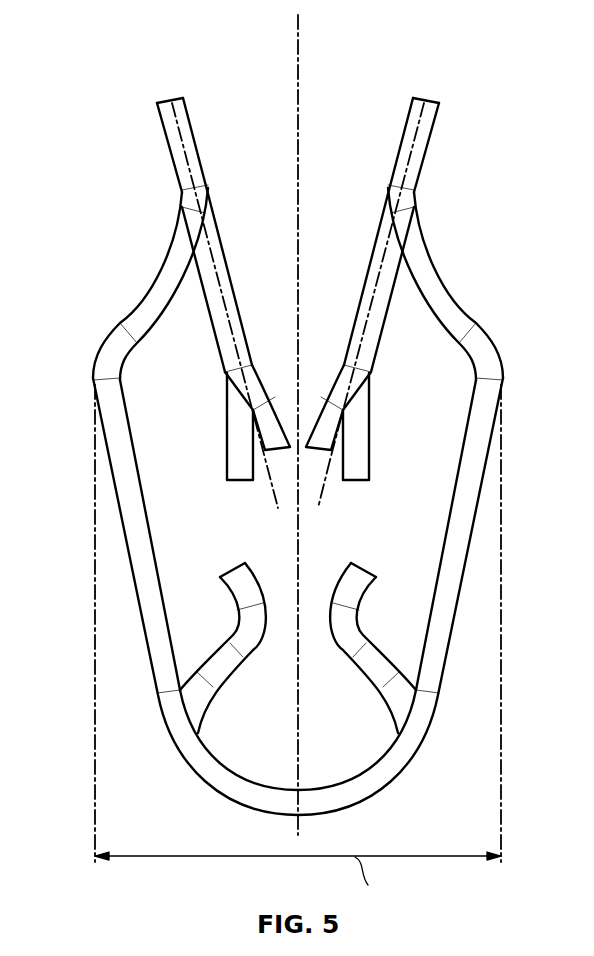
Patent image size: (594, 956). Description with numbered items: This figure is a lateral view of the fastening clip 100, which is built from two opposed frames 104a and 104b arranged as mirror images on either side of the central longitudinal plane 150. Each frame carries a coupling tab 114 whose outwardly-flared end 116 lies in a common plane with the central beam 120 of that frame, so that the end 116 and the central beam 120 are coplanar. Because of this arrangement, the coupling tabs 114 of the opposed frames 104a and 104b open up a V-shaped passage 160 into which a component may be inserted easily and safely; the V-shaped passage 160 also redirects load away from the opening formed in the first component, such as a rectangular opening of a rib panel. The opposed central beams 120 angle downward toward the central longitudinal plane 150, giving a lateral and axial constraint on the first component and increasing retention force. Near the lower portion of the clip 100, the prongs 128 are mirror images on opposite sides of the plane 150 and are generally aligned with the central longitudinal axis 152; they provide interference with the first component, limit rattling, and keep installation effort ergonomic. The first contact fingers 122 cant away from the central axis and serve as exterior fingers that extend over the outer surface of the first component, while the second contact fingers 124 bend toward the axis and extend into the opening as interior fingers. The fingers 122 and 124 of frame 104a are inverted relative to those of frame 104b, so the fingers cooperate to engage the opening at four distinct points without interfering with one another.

The fastening clip 100 is at (112, 55).
The frame 104a is at (123, 537).
The frame 104b is at (472, 537).
The coupling tab 114 is at (178, 143).
The outwardly-flared end 116 is at (178, 100).
The central beam 120 is at (210, 318).
The first contact finger 122 is at (237, 430).
The second contact finger 124 is at (274, 410).
The prong 128 is at (200, 658).
The central longitudinal plane 150 is at (300, 45).
The central longitudinal axis 152 is at (300, 90).
The V-shaped passage 160 is at (323, 485).